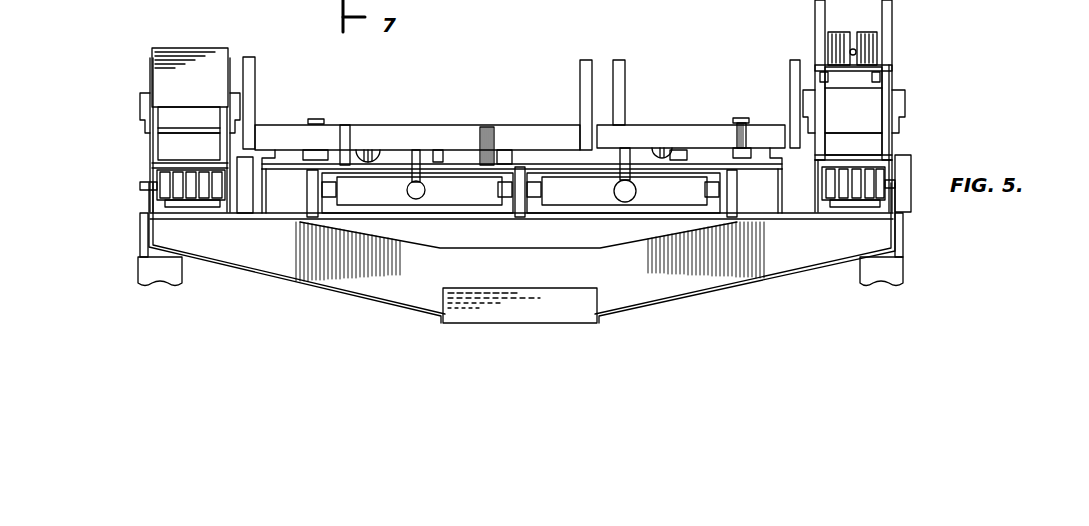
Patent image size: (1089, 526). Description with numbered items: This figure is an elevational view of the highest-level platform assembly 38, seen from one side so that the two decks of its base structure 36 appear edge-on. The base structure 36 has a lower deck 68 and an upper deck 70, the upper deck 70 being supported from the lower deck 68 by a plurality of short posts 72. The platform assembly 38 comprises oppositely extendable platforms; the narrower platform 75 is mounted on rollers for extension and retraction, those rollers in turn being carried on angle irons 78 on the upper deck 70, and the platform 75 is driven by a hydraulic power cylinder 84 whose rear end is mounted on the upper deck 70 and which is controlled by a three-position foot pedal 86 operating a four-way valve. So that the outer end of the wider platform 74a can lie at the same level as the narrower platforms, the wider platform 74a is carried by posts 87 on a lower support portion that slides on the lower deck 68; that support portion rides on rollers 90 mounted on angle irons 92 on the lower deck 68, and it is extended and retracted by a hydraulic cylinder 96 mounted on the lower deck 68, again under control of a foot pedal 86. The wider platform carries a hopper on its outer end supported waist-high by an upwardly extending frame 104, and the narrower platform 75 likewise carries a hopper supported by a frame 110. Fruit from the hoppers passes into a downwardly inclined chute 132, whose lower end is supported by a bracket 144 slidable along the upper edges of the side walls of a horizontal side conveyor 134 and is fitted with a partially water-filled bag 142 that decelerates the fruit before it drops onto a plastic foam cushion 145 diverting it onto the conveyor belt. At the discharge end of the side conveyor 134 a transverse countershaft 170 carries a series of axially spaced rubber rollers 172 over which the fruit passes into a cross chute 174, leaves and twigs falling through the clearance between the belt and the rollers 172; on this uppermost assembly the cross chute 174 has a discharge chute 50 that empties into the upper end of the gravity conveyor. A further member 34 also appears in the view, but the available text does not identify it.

The frame 34 is at (135, 0).
The base structure 36 is at (367, 222).
The platform assembly 38 is at (635, 125).
The discharge chute 50 is at (582, 298).
The lower deck 68 is at (452, 222).
The upper deck 70 is at (510, 160).
The short posts 72 is at (306, 195).
The wider platform 74a is at (402, 125).
The narrower platform 75 is at (690, 132).
The angle irons 78 is at (276, 150).
The hydraulic power cylinder 84 is at (366, 150).
The three-position foot pedal 86 is at (318, 117).
The posts 87 is at (343, 126).
The rollers 90 is at (337, 190).
The angle irons 92 is at (567, 213).
The hydraulic cylinder 96 is at (427, 186).
The frame 104 is at (255, 73).
The frame 110 is at (792, 67).
The inclined chute 132 is at (150, 62).
The side conveyor 134 is at (150, 141).
The bag 142 is at (180, 112).
The bracket 144 is at (140, 105).
The plastic foam cushion 145 is at (165, 148).
The transverse countershaft 170 is at (148, 186).
The rubber rollers 172 is at (200, 198).
The cross chute 174 is at (689, 293).